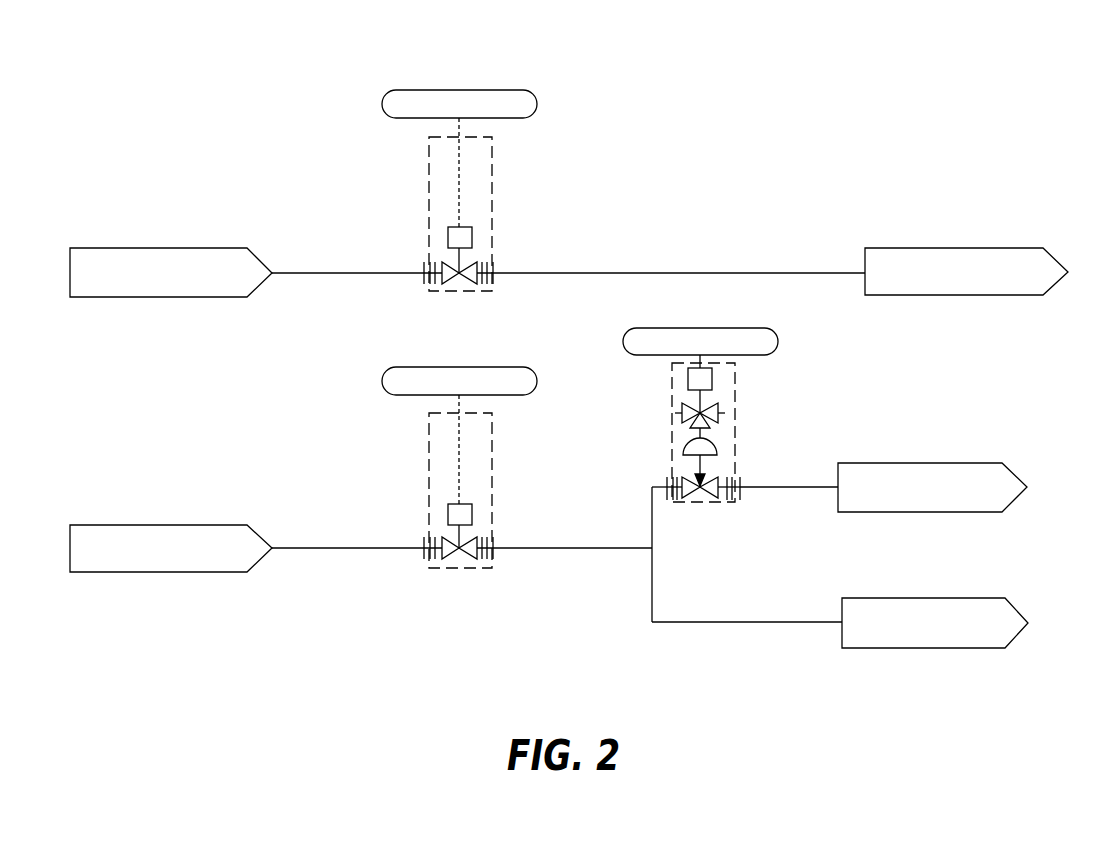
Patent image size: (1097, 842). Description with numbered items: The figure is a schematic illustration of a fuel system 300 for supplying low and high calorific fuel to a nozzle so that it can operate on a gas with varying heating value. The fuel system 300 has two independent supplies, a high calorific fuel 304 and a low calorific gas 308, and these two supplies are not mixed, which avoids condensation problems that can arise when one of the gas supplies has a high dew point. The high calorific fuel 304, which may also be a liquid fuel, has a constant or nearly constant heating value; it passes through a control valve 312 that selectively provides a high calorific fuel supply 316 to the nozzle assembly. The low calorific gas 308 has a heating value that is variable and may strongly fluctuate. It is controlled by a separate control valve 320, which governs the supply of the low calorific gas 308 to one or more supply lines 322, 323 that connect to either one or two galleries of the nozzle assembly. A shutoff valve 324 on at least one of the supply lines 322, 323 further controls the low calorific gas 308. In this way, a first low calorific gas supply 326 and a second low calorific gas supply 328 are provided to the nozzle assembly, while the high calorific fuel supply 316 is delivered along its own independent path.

The fuel system 300 is at (711, 97).
The high calorific fuel 304 is at (140, 297).
The low calorific gas 308 is at (150, 572).
The control valve 312 is at (383, 103).
The high calorific fuel supply 316 is at (940, 295).
The control valve 320 is at (383, 381).
The supply line 322 is at (763, 622).
The supply line 323 is at (763, 487).
The shutoff valve 324 is at (778, 345).
The first low calorific gas supply 326 is at (898, 463).
The second low calorific gas supply 328 is at (885, 648).